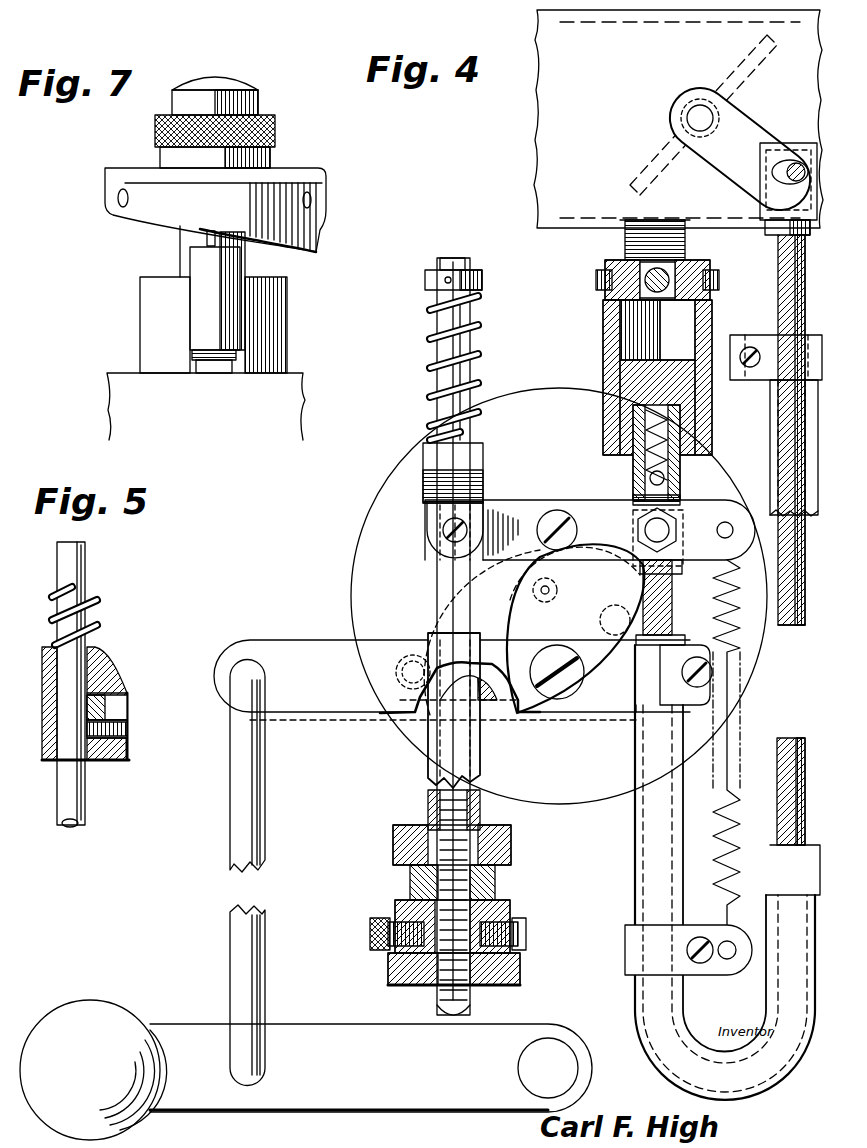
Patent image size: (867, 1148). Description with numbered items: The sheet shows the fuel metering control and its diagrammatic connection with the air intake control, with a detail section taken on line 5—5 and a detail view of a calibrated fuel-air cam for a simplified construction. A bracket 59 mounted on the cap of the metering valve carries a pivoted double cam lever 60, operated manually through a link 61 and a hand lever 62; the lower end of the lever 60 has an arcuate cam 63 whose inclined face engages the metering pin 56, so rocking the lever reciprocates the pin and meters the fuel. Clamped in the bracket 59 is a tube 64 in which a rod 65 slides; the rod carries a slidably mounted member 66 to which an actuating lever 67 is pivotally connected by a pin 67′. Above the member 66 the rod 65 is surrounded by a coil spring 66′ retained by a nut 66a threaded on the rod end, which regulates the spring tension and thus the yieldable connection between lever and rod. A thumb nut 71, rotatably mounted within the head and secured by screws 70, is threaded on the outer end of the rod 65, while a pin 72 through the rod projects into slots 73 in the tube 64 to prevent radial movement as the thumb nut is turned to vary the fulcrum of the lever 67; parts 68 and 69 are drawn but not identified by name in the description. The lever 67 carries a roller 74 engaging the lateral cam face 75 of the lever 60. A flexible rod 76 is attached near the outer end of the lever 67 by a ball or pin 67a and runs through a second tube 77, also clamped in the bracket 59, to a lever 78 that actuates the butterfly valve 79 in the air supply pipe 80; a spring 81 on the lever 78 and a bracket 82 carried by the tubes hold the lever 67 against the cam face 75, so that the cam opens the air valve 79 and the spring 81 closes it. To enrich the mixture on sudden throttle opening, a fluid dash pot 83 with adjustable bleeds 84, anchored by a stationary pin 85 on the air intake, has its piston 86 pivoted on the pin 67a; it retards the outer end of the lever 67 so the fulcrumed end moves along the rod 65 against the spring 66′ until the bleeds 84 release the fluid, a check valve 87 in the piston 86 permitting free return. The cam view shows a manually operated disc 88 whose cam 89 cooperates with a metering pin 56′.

In FIG. 4, the section line 5— 5 is at (507, 402).
In FIG. 4, the metering pin 56 is at (567, 582).
In FIG. 7, the metering pin 56′ is at (207, 236).
In FIG. 4, the bracket 59 is at (598, 692).
In FIG. 4, the double cam lever 60 is at (300, 655).
In FIG. 4, the link 61 is at (240, 838).
In FIG. 4, the hand lever 62 is at (306, 1070).
In FIG. 4, the arcuate cam 63 is at (557, 659).
In FIG. 4, the tube 64 is at (433, 750).
In FIG. 5, the rod 65 is at (72, 798).
In FIG. 4, the rod 65 is at (452, 262).
In FIG. 5, the slidably mounted member 66 is at (100, 657).
In FIG. 4, the slidably mounted member 66 is at (440, 460).
In FIG. 5, the coil spring 66′ is at (90, 602).
In FIG. 4, the coil spring 66′ is at (477, 347).
In FIG. 4, the nut 66a is at (480, 270).
In FIG. 5, the actuating lever 67 is at (97, 763).
In FIG. 4, the actuating lever 67 is at (507, 493).
In FIG. 5, the pin 67′ is at (123, 735).
In FIG. 4, the pin 67′ is at (447, 530).
In FIG. 4, the ball or pin 67a is at (660, 527).
In FIG. 4, the nut 68 is at (430, 800).
In FIG. 4, the nut 69 is at (397, 830).
In FIG. 4, the screws 70 is at (373, 922).
In FIG. 4, the thumb nut 71 is at (515, 972).
In FIG. 4, the pin 72 is at (417, 880).
In FIG. 4, the slots 73 is at (470, 877).
In FIG. 4, the roller 74 is at (550, 510).
In FIG. 4, the lateral cam face 75 is at (613, 533).
In FIG. 4, the flexible rod 76 is at (730, 616).
In FIG. 4, the tube 77 is at (647, 836).
In FIG. 4, the lever 78 is at (747, 133).
In FIG. 4, the butterfly valve 79 is at (743, 62).
In FIG. 4, the air supply pipe 80 is at (678, 119).
In FIG. 4, the spring 81 is at (737, 635).
In FIG. 4, the bracket 82 is at (712, 968).
In FIG. 4, the fluid dash pot 83 is at (617, 337).
In FIG. 4, the adjustable bleeds 84 is at (630, 260).
In FIG. 4, the stationary pin 85 is at (687, 253).
In FIG. 4, the piston 86 is at (683, 377).
In FIG. 4, the check valve 87 is at (650, 472).
In FIG. 7, the manually operated disc 88 is at (302, 177).
In FIG. 7, the cam 89 is at (280, 217).